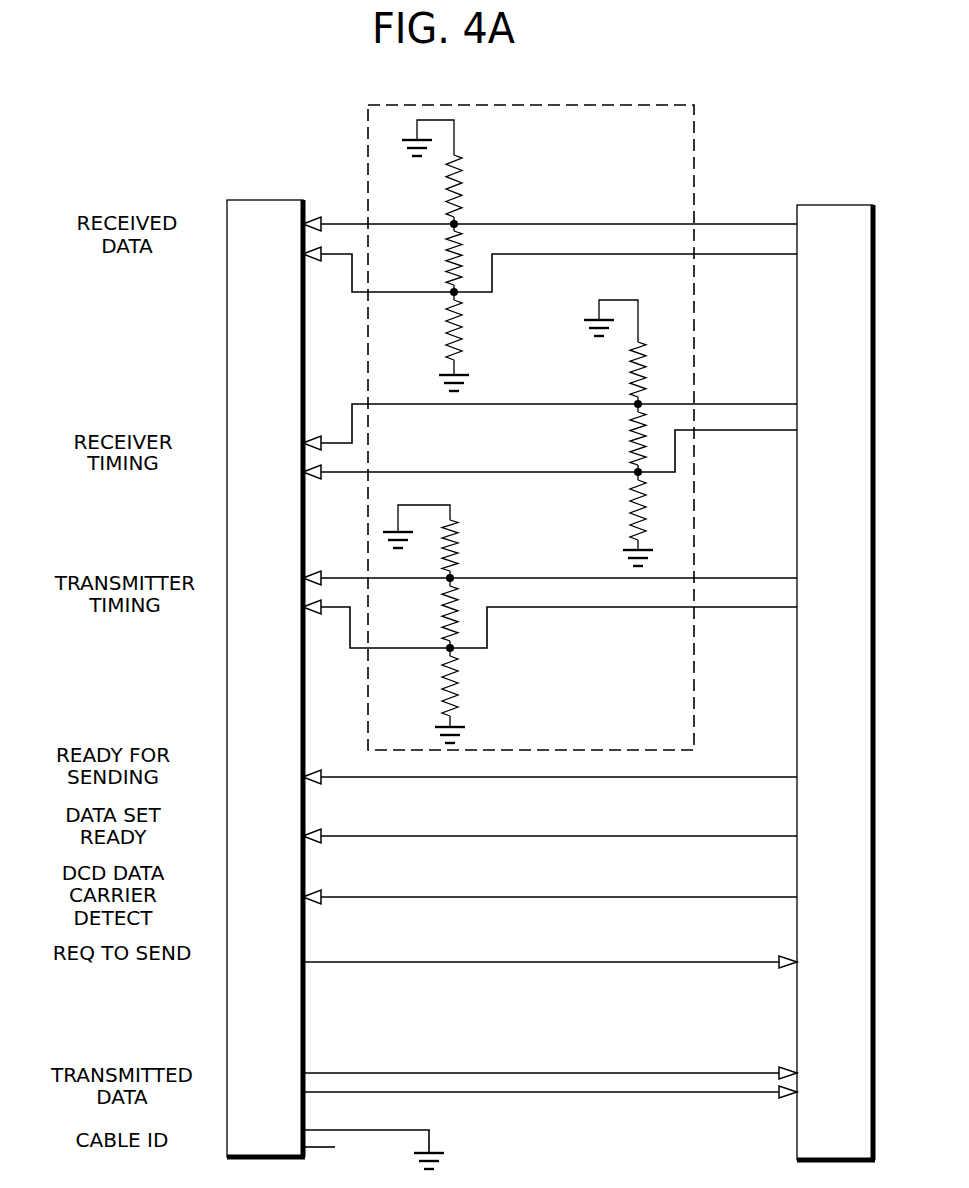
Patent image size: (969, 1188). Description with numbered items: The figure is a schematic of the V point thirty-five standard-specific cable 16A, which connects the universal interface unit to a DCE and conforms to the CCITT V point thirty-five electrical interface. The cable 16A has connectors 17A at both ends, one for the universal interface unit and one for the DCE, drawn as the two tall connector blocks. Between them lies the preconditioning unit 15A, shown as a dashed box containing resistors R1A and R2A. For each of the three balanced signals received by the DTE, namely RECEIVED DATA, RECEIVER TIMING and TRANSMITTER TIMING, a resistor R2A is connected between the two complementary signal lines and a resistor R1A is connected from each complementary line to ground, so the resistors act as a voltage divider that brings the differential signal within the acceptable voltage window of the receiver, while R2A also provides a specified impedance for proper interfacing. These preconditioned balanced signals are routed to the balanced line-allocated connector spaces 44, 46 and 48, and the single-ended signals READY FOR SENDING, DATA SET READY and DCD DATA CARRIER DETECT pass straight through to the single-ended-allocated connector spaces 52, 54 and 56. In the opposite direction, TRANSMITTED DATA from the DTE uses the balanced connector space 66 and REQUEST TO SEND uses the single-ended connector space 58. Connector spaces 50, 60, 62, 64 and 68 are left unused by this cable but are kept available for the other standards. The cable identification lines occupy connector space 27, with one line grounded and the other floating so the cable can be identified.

The preconditioning unit 15A is at (702, 142).
The V.35 standard-specific cable 16A is at (331, 151).
The connectors 17A is at (250, 200).
The balanced line-allocated connector space 44 is at (526, 254).
The balanced line-allocated connector space 46 is at (524, 441).
The balanced line-allocated connector space 48 is at (524, 609).
The connector space 50 is at (264, 683).
The single-ended-allocated connector space 52 is at (524, 778).
The single-ended-allocated connector space 54 is at (524, 835).
The single-ended-allocated connector space 56 is at (524, 895).
The single-ended-allocated connector space 58 is at (524, 962).
The connector space 60 is at (265, 993).
The connector space 62 is at (265, 1020).
The connector space 64 is at (265, 1045).
The balanced line-allocated connector space 66 is at (524, 1082).
The connector space 68 is at (265, 1112).
The cable ID connector space 27 is at (348, 1148).
The resistor R1A is at (565, 435).
The resistor R2A is at (519, 436).